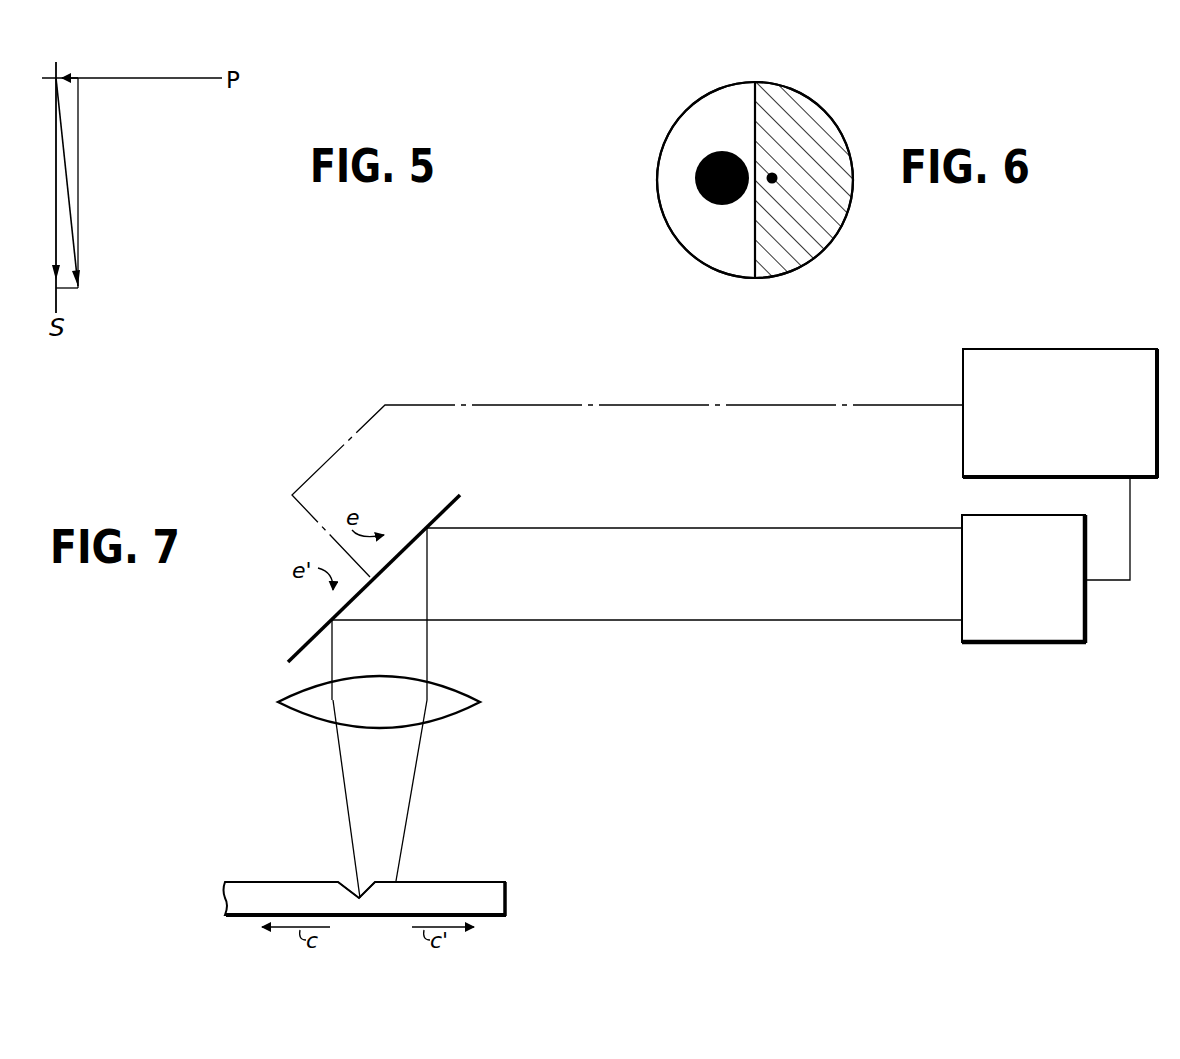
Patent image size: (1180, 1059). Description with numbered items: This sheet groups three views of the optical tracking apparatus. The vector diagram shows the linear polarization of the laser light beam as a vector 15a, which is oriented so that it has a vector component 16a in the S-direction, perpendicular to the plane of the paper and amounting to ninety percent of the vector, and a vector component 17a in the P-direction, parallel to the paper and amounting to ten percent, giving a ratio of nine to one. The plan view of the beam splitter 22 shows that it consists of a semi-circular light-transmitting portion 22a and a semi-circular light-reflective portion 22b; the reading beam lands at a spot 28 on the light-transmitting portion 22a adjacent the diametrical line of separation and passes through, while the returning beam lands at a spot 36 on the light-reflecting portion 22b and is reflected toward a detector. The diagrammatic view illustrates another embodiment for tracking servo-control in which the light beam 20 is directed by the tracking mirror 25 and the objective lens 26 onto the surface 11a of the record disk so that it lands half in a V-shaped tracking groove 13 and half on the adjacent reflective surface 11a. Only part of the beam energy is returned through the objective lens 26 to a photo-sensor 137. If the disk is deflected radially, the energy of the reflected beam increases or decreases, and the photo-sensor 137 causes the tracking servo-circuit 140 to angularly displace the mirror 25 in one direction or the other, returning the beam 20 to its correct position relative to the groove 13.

In FIG. 5, the vector 15a is at (66, 182).
In FIG. 5, the vector component in the S-direction 16a is at (56, 224).
In FIG. 5, the vector component in the P-direction 17a is at (60, 74).
In FIG. 6, the beam splitter 22 is at (838, 116).
In FIG. 6, the light-transmitting portion 22a is at (660, 226).
In FIG. 6, the light-reflective portion 22b is at (836, 222).
In FIG. 6, the landing spot 28 is at (703, 196).
In FIG. 6, the landing spot 36 is at (775, 184).
In FIG. 7, the tracking servo-circuit 140 is at (1009, 352).
In FIG. 7, the photo-sensor 137 is at (1022, 644).
In FIG. 7, the tracking mirror 25 is at (302, 640).
In FIG. 7, the light beam 20 is at (677, 623).
In FIG. 7, the objective lens 26 is at (300, 706).
In FIG. 7, the surface of the record disk 11a is at (473, 882).
In FIG. 7, the tracking groove 13 is at (352, 882).